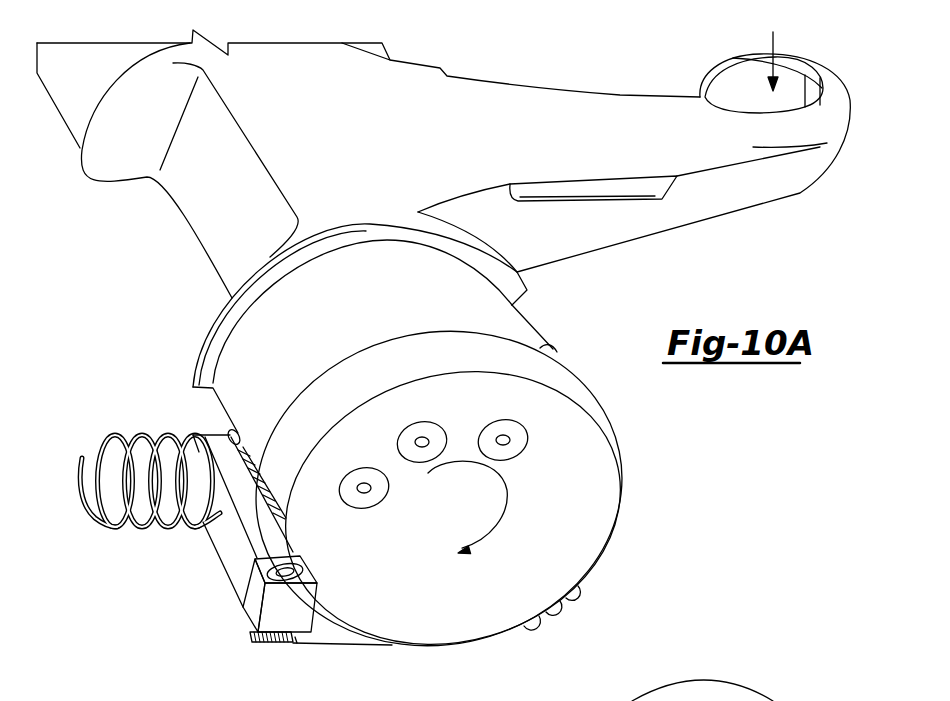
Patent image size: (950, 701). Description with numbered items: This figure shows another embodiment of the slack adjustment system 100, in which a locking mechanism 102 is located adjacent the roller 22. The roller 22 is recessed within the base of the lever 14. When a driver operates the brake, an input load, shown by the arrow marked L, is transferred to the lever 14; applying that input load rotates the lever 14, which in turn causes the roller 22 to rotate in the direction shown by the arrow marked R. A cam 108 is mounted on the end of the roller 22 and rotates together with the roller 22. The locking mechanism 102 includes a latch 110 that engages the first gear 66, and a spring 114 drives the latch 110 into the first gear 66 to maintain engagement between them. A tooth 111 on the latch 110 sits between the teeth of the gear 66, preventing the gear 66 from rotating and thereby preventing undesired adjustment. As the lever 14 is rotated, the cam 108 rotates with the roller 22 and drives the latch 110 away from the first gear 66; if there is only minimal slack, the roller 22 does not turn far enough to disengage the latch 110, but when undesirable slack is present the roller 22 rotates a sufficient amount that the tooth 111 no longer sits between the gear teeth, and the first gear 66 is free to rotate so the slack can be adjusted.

The lever 14 is at (697, 210).
The roller 22 is at (500, 311).
The first gear 66 is at (231, 432).
The slack adjustment system 100 is at (112, 309).
The locking mechanism 102 is at (172, 541).
The cam 108 is at (597, 514).
The latch 110 is at (232, 556).
The tooth 111 is at (241, 442).
The spring 114 is at (109, 443).